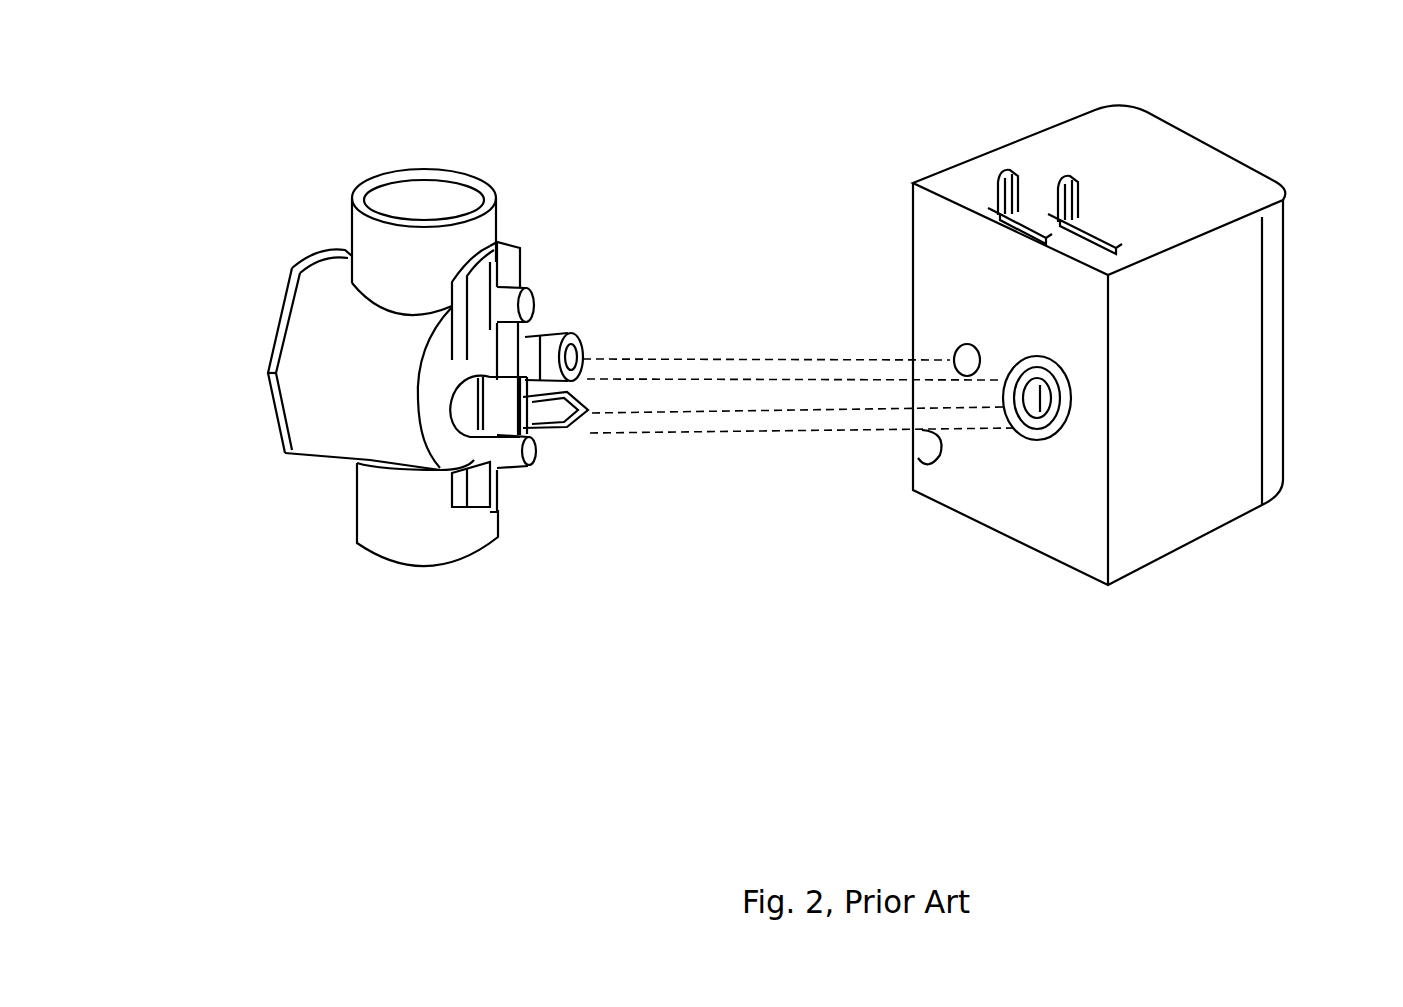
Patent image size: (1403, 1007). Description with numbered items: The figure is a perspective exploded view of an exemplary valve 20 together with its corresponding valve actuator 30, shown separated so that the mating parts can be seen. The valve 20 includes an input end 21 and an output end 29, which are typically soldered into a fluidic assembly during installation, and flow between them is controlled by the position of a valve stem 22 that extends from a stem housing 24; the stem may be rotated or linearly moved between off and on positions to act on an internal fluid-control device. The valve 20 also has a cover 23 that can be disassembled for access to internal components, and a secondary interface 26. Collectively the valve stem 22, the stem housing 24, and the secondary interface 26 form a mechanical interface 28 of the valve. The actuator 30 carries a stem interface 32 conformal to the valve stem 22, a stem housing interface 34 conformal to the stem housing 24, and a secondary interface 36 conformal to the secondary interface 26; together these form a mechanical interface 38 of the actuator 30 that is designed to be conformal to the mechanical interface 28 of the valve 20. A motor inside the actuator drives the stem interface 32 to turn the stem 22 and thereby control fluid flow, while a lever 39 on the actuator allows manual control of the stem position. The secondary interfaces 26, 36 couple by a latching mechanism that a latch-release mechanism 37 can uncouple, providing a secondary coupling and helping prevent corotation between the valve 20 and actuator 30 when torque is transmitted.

The valve 20 is at (421, 379).
The input end 21 is at (452, 572).
The valve stem 22 is at (581, 434).
The cover 23 is at (290, 266).
The stem housing 24 is at (504, 414).
The secondary interface 26 is at (583, 344).
The mechanical interface 28 is at (541, 278).
The output end 29 is at (431, 198).
The valve actuator 30 is at (1055, 425).
The stem interface 32 is at (1034, 392).
The stem housing interface 34 is at (1052, 427).
The secondary interface 36 is at (952, 350).
The latch-release mechanism 37 is at (988, 172).
The mechanical interface 38 is at (880, 245).
The lever 39 is at (1052, 188).